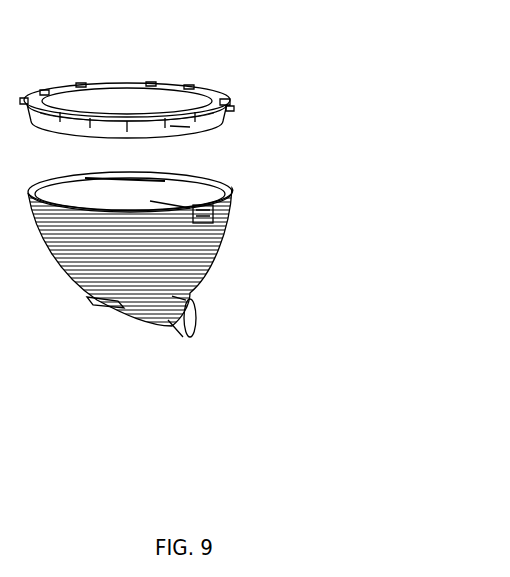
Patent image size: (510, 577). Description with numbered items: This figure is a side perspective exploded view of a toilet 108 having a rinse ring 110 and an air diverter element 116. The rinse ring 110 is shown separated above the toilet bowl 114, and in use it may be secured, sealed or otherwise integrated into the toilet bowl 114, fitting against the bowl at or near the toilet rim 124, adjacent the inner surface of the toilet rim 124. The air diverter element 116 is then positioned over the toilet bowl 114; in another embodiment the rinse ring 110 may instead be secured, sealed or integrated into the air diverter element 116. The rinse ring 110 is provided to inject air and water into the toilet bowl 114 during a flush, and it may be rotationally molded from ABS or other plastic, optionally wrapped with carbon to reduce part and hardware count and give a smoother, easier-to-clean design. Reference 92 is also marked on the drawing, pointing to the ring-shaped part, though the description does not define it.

The flange ring 92 is at (160, 68).
The toilet 108 is at (289, 105).
The rinse ring 110 is at (214, 181).
The toilet bowl 114 is at (195, 256).
The air diverter element 116 is at (180, 128).
The toilet rim 124 is at (92, 207).